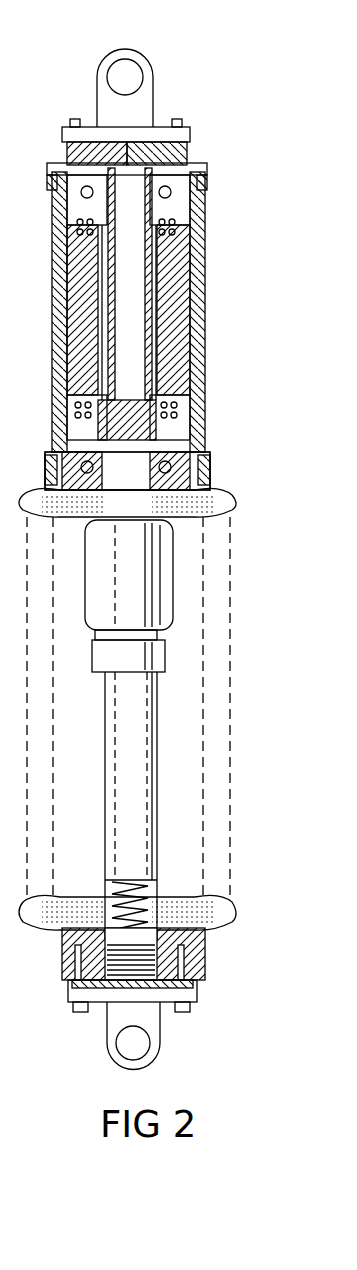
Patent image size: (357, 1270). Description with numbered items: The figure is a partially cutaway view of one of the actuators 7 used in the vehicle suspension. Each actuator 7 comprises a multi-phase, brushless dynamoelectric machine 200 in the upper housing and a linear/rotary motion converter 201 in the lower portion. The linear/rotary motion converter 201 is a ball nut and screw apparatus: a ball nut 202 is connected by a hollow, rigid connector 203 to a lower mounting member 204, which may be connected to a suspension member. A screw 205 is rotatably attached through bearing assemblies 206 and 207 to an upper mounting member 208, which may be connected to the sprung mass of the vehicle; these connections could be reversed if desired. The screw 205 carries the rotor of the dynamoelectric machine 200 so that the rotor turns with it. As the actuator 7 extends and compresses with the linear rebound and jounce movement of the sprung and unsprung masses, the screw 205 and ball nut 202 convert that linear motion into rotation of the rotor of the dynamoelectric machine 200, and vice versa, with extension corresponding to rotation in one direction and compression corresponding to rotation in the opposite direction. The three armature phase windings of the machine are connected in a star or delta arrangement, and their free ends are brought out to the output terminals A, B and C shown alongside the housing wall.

The actuator 7 is at (199, 126).
The multi-phase brushless dynamoelectric machine 200 is at (40, 330).
The linear/rotary motion converter 201 is at (240, 690).
The ball nut 202 is at (175, 598).
The hollow rigid connector 203 is at (110, 788).
The lower mounting member 204 is at (162, 1040).
The screw 205 is at (200, 472).
The bearing assembly 206 is at (157, 465).
The bearing assembly 207 is at (190, 160).
The upper mounting member 208 is at (100, 78).
The output terminal A is at (192, 275).
The output terminal B is at (192, 308).
The output terminal C is at (192, 338).